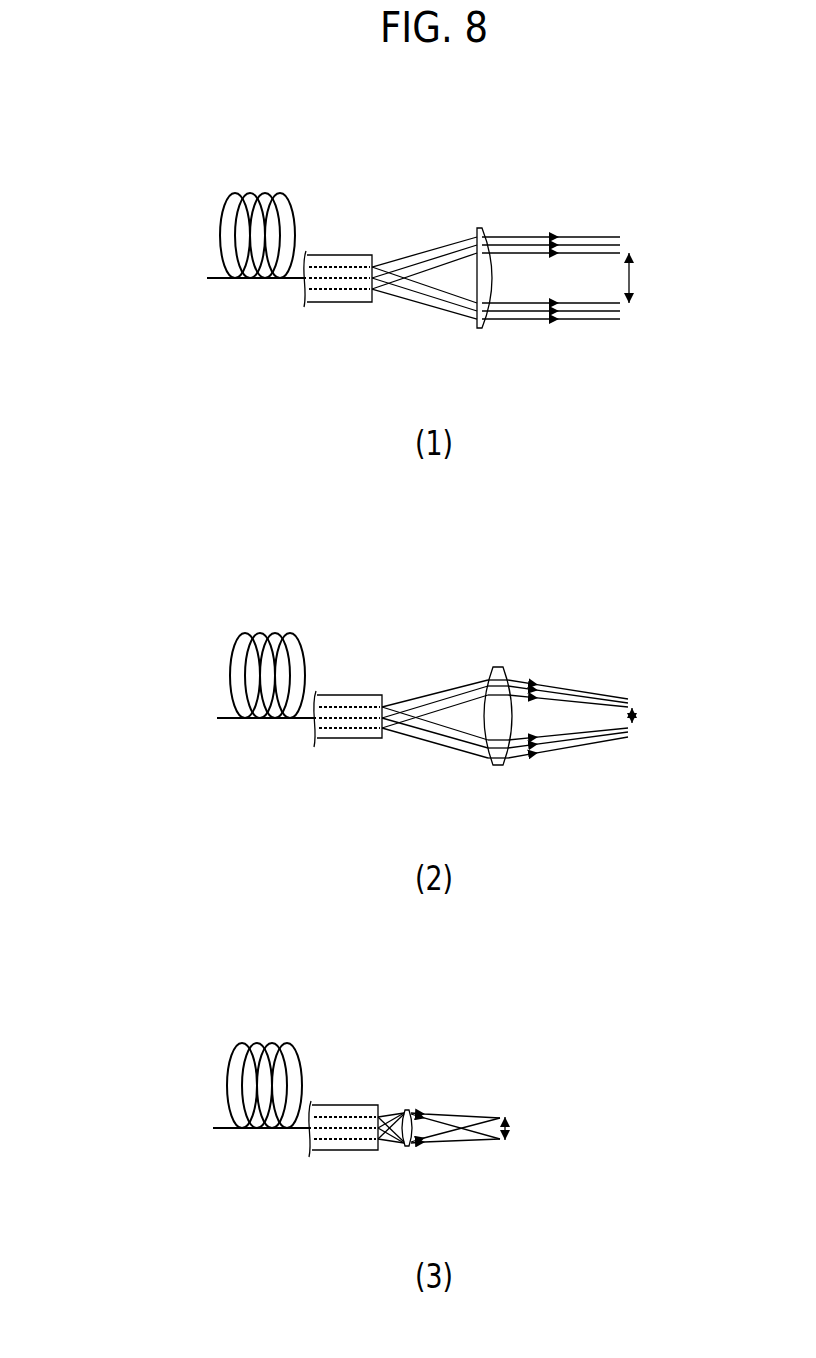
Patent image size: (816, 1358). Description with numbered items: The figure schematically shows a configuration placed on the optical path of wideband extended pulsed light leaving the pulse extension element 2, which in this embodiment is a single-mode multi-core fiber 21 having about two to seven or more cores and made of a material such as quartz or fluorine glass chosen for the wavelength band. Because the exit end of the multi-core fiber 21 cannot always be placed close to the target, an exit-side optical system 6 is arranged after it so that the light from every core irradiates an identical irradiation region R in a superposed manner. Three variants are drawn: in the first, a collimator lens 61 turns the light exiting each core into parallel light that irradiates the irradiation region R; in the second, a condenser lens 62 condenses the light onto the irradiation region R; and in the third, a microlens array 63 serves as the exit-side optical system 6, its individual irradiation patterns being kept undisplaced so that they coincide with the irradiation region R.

The pulse extension element 2 is at (272, 170).
The multi-core fiber 21 is at (325, 303).
The exit-side optical system 6 is at (503, 207).
The collimator lens 61 is at (480, 330).
The condenser lens 62 is at (497, 766).
The microlens array 63 is at (407, 1148).
The irradiation region R is at (629, 278).